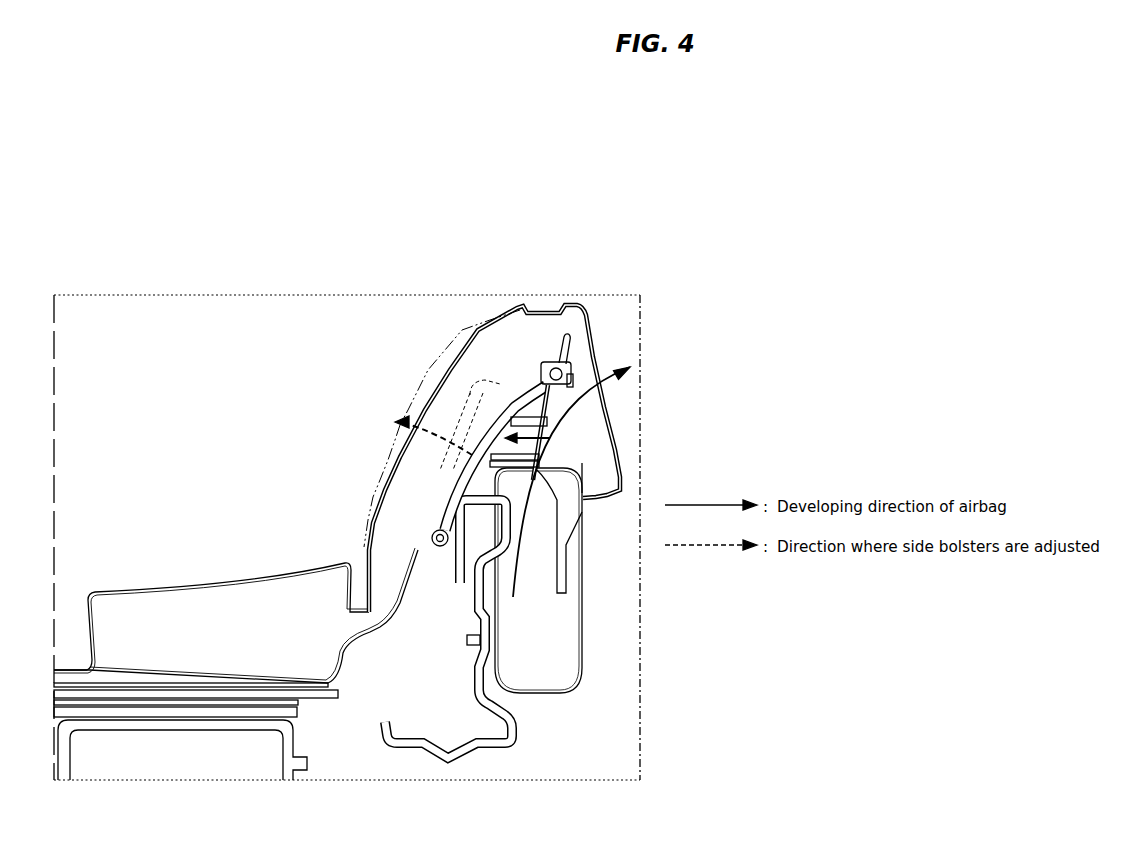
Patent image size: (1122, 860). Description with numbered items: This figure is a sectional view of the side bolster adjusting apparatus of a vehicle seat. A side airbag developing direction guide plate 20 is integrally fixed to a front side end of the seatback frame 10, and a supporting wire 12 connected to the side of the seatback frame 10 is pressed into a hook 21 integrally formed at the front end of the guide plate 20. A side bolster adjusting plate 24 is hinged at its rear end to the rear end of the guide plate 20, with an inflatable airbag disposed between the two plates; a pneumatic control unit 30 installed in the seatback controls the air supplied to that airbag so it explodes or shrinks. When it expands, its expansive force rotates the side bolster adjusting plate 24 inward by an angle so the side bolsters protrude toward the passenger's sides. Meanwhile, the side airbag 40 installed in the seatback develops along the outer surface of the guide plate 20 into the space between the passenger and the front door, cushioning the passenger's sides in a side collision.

The seatback frame 10 is at (487, 748).
The supporting wire 12 is at (572, 352).
The side airbag developing direction guide plate 20 is at (547, 440).
The hook 21 is at (574, 382).
The side bolster adjusting plate 24 is at (480, 413).
The pneumatic control unit 30 is at (450, 355).
The side airbag 40 is at (578, 620).